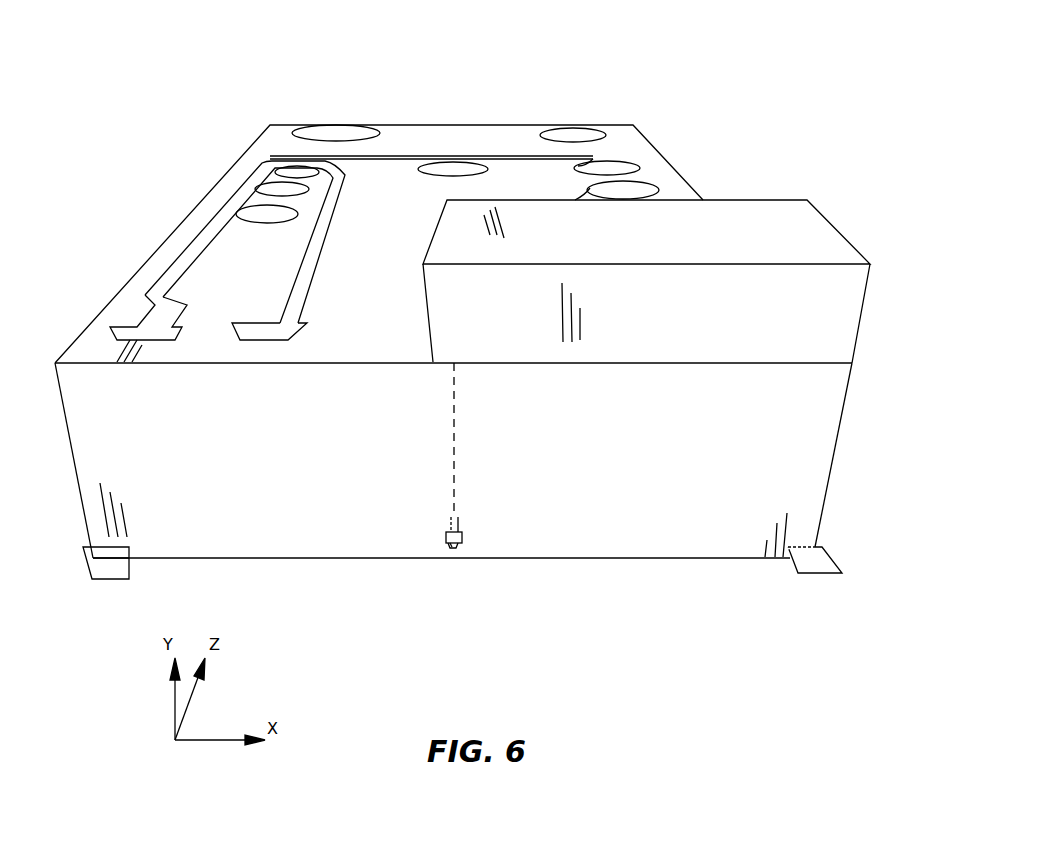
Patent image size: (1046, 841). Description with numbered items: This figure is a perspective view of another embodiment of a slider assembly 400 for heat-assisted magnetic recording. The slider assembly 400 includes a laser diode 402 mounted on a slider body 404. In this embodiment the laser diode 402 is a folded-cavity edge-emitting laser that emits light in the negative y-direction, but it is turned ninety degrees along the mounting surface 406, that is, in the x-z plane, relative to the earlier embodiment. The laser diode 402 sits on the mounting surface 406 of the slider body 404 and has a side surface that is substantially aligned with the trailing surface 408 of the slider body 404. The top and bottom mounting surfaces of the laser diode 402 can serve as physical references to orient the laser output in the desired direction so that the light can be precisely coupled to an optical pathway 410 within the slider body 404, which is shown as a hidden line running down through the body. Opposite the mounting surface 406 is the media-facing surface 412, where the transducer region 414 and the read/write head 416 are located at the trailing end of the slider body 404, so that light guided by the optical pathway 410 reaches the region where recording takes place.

The slider assembly 400 is at (648, 65).
The laser diode 402 is at (423, 293).
The slider body 404 is at (160, 210).
The mounting surface 406 is at (270, 138).
The trailing surface 408 is at (113, 580).
The optical pathway 410 is at (454, 437).
The media-facing surface 412 is at (828, 578).
The transducer region 414 is at (452, 545).
The read/write head 416 is at (461, 545).